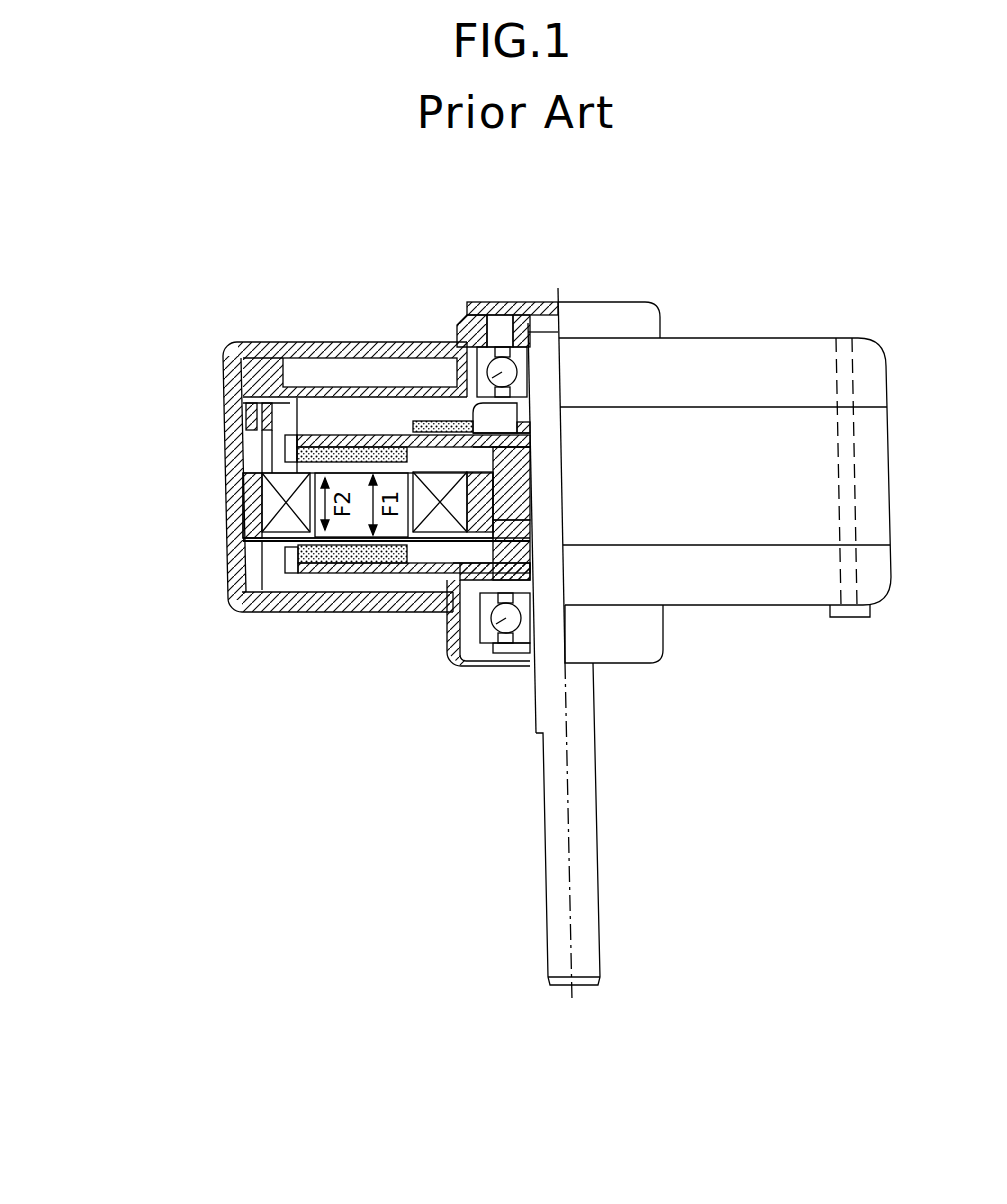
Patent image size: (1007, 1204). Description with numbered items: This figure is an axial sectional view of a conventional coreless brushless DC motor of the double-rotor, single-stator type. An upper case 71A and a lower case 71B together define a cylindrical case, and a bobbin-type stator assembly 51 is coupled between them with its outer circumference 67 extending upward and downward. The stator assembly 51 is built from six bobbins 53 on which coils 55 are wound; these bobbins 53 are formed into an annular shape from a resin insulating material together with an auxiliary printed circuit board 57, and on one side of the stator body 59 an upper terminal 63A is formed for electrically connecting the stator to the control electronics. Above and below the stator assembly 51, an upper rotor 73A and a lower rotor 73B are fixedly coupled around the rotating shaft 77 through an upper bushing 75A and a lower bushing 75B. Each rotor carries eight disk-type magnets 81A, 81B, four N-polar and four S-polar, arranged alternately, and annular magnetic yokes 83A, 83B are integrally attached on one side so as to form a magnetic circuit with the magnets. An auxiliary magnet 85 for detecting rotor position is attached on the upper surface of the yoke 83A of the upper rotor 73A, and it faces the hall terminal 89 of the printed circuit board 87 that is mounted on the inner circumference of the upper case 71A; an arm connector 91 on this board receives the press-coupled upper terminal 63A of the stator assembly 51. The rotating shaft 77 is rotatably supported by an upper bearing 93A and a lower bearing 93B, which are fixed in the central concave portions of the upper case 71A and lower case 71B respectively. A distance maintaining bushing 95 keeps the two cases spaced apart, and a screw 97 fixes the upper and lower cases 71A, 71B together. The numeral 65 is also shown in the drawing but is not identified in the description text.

The stator assembly 51 is at (232, 592).
The bobbins 53 is at (250, 515).
The coils 55 is at (243, 476).
The auxiliary printed circuit board 57 is at (380, 606).
The stator body 59 is at (243, 500).
The upper terminal 63A is at (250, 445).
The spacer 65 is at (347, 593).
The outer circumference 67 is at (243, 427).
The upper case 71A is at (358, 342).
The lower case 71B is at (398, 612).
The upper rotor 73A is at (262, 342).
The lower rotor 73B is at (262, 595).
The upper bushing 75A is at (510, 495).
The lower bushing 75B is at (513, 547).
The rotating shaft 77 is at (583, 773).
The upper rotor magnets 81A is at (357, 436).
The lower rotor magnets 81B is at (327, 567).
The upper magnetic yoke 83A is at (560, 438).
The lower magnetic yoke 83B is at (460, 600).
The auxiliary magnet 85 is at (527, 425).
The printed circuit board 87 is at (298, 422).
The hall terminal 89 is at (441, 335).
The arm connector 91 is at (243, 400).
The upper bearing 93A is at (505, 356).
The lower bearing 93B is at (482, 665).
The distance maintaining bushing 95 is at (527, 425).
The screw 97 is at (830, 618).